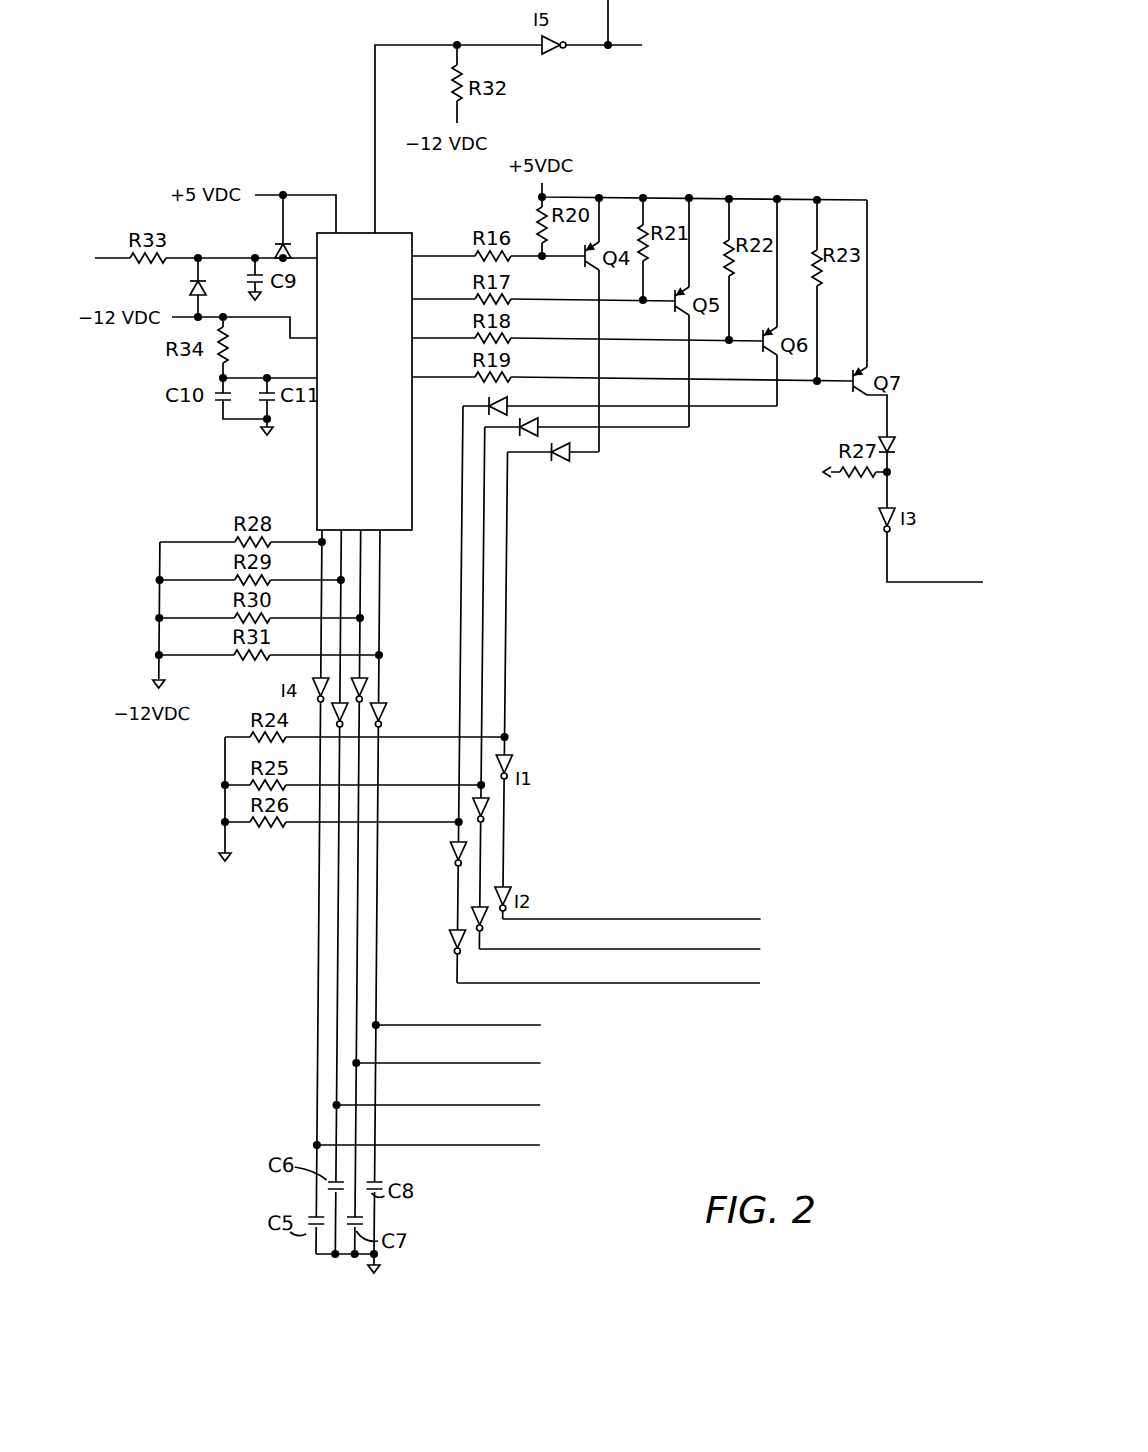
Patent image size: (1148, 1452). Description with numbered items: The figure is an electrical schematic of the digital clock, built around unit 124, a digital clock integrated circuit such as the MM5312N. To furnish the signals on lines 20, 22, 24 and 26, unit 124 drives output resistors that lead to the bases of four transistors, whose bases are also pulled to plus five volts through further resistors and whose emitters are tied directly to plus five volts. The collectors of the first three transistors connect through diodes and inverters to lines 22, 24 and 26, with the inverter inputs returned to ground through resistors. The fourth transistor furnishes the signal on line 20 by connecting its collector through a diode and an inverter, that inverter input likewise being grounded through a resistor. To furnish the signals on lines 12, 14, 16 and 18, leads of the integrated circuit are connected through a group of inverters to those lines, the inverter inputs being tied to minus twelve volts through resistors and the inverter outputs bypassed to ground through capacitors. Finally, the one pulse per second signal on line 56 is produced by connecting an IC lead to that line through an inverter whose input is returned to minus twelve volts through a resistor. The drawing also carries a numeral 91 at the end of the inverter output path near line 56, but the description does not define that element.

The line 12 is at (394, 1025).
The line 14 is at (441, 1042).
The line 16 is at (477, 1083).
The line 18 is at (491, 1123).
The line 20 is at (971, 587).
The line 22 is at (750, 987).
The line 24 is at (746, 949).
The line 26 is at (729, 921).
The line 56 is at (605, 47).
The line 91 is at (611, 10).
The unit 124 is at (404, 238).